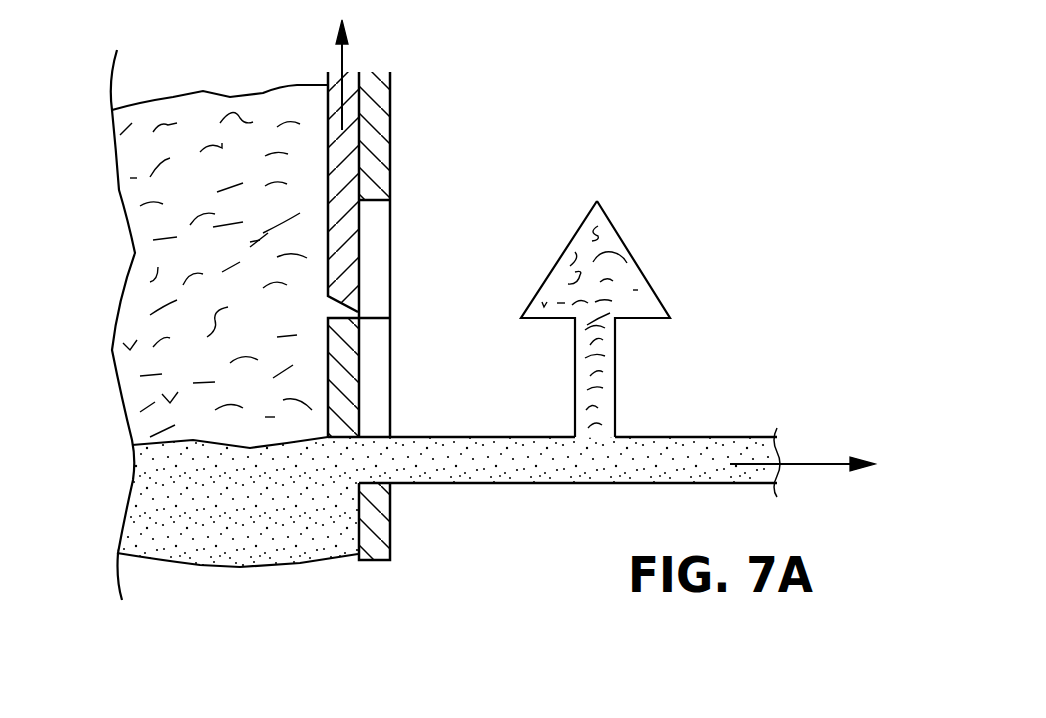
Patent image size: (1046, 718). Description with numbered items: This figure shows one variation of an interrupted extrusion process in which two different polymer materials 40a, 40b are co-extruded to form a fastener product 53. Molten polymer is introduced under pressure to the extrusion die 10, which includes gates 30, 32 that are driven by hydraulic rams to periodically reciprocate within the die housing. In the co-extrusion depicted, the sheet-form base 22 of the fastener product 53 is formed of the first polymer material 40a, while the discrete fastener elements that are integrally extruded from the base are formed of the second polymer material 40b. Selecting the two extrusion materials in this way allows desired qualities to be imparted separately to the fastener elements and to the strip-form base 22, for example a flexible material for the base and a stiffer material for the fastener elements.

The extrusion die 10 is at (377, 243).
The sheet-form base 22 is at (478, 473).
The gate 30 is at (345, 410).
The gate 32 is at (335, 97).
The polymer material 40a is at (213, 542).
The polymer material 40b is at (140, 190).
The fastener product 53 is at (690, 248).